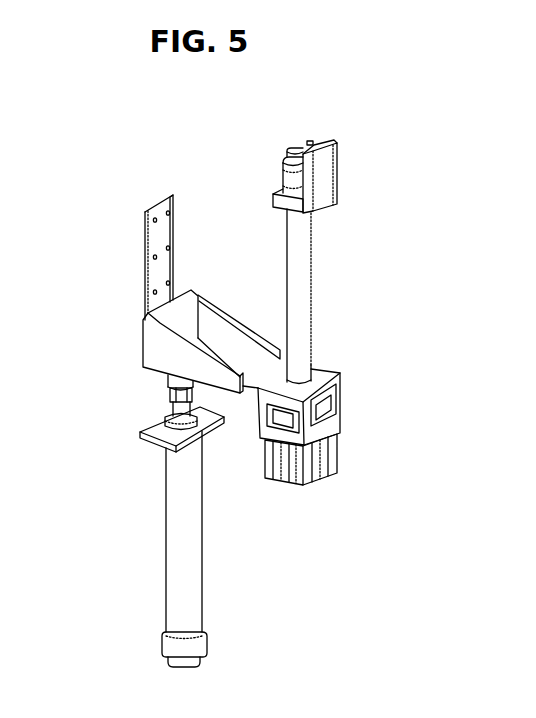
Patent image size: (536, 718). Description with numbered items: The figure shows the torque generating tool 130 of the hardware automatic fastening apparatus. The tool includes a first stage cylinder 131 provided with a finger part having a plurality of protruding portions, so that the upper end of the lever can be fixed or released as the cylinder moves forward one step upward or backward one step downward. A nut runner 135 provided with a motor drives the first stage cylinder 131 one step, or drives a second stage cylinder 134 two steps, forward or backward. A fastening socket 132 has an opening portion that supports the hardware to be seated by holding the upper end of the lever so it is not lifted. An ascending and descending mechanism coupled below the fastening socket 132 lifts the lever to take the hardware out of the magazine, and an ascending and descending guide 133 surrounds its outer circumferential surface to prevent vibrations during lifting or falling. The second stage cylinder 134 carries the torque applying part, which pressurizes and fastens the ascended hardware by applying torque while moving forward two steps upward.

The torque generating tool 130 is at (96, 129).
The first stage cylinder 131 is at (344, 141).
The fastening socket 132 is at (292, 146).
The ascending and descending guide 133 is at (279, 181).
The second stage cylinder 134 is at (318, 302).
The nut runner 135 is at (146, 424).